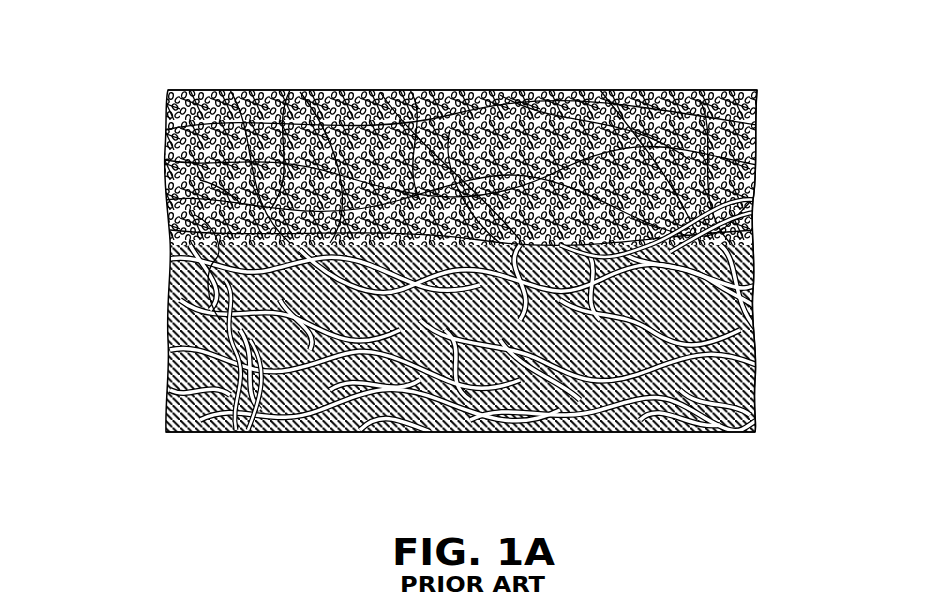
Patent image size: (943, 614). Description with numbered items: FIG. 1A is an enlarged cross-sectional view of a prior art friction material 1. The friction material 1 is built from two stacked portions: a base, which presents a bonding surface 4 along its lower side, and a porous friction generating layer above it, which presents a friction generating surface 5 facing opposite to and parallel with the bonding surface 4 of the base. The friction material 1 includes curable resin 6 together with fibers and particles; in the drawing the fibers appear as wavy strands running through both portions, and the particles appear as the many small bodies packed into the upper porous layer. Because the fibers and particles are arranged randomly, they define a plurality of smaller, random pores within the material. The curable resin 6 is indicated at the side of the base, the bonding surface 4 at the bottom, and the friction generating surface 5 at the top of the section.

The friction material 1 is at (102, 72).
The bonding surface 4 is at (527, 436).
The friction generating surface 5 is at (643, 85).
The curable resin 6 is at (755, 378).